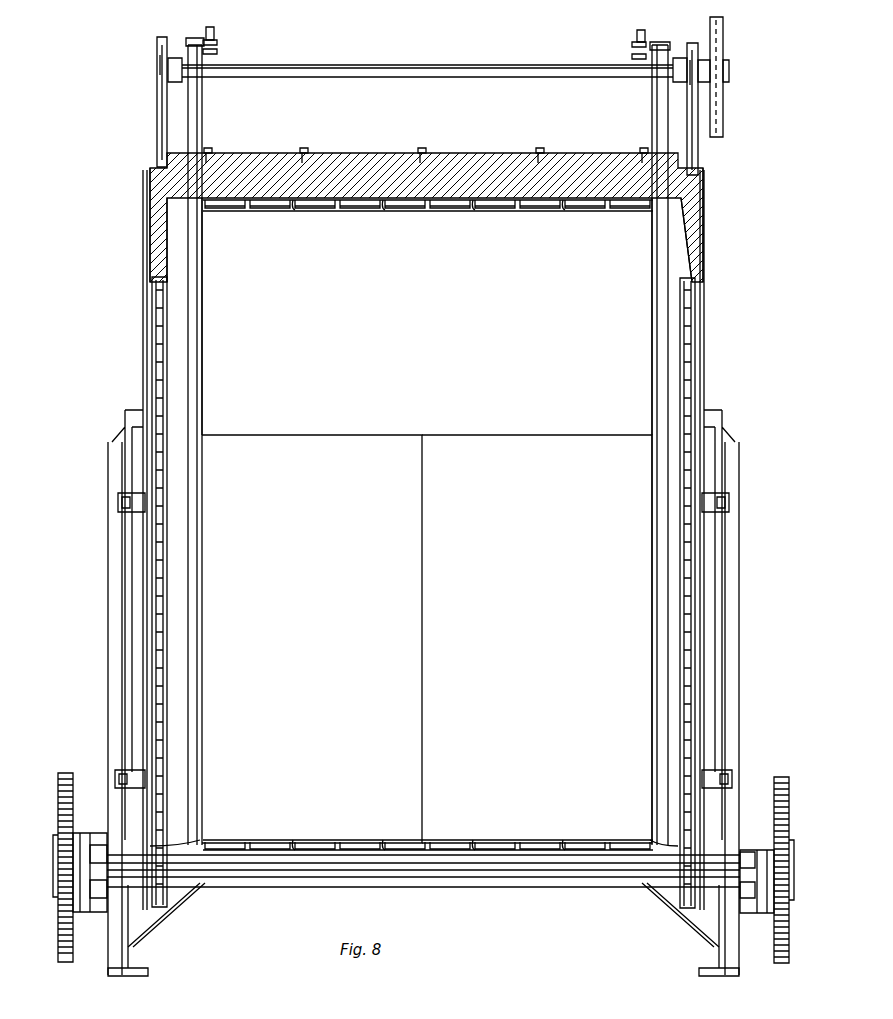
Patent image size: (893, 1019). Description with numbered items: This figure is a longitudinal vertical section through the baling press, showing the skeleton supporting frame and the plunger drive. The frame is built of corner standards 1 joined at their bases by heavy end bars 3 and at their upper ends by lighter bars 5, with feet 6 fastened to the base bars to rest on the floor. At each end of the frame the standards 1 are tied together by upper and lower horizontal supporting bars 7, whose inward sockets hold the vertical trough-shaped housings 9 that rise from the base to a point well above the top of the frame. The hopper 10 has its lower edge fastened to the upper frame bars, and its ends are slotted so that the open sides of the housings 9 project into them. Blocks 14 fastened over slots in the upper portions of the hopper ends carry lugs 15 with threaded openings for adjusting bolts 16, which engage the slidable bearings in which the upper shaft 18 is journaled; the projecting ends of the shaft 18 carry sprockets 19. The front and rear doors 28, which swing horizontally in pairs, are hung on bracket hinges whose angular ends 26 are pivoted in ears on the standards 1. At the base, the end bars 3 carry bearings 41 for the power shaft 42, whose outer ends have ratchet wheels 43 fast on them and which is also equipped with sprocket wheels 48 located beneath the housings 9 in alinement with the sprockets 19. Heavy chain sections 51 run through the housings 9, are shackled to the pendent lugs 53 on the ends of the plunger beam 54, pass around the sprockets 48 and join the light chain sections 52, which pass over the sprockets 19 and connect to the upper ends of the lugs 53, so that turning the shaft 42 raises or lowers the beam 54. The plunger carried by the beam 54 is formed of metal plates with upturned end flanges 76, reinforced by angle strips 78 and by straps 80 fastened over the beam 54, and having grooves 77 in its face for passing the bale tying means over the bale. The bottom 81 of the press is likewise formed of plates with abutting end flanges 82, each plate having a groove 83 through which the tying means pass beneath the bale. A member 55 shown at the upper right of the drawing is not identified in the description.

The corner standards 1 is at (108, 668).
The end bars 3 is at (95, 845).
The upper end bars 5 is at (125, 422).
The feet 6 is at (136, 976).
The supporting bars 7 is at (118, 505).
The trough-shaped housings 9 is at (188, 318).
The hopper 10 is at (427, 316).
The blocks 14 is at (190, 50).
The lugs 15 is at (217, 43).
The adjusting bolts 16 is at (214, 30).
The shaft 18 is at (440, 78).
The sprockets 19 is at (157, 68).
The angular ends 26 is at (537, 639).
The front and rear doors 28 is at (312, 639).
The bearings 41 is at (95, 912).
The power shaft 42 is at (492, 888).
The ratchet wheels 43 is at (60, 962).
The sprocket wheels 48 is at (160, 845).
The heavy chain sections 51 is at (167, 392).
The light chain sections 52 is at (716, 152).
The pendent lugs 53 is at (150, 193).
The plunger beam 54 is at (383, 146).
The bar 55 is at (723, 88).
The upturned flanges 76 is at (218, 212).
The grooves 77 is at (262, 212).
The angle strips 78 is at (293, 212).
The straps 80 is at (302, 150).
The bottom 81 is at (348, 840).
The end flanges 82 is at (292, 851).
The groove 83 is at (250, 851).